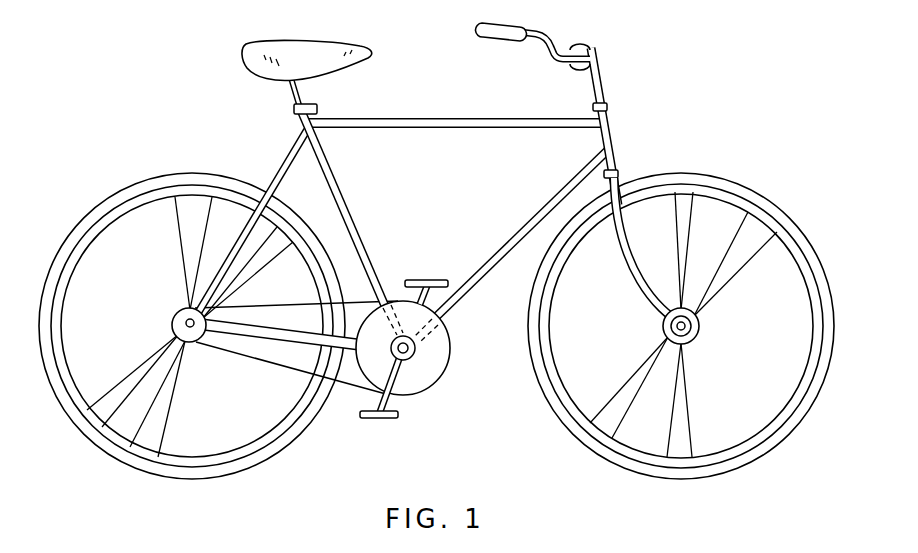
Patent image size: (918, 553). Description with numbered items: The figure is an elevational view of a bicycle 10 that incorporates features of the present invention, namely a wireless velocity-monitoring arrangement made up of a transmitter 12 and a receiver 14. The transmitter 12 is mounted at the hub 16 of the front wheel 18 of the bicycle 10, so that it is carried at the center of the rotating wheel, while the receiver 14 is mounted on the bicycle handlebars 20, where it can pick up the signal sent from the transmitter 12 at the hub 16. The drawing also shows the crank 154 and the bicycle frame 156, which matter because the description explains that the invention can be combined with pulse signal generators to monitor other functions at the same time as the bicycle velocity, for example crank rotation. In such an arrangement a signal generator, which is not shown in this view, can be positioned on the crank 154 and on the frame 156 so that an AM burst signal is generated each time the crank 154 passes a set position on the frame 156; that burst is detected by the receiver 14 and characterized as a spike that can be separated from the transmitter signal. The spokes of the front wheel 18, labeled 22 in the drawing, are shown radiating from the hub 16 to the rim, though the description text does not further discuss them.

The bicycle 10 is at (614, 144).
The transmitter 12 is at (700, 318).
The receiver 14 is at (592, 44).
The hub 16 is at (694, 342).
The front wheel 18 is at (561, 420).
The bicycle handlebars 20 is at (540, 33).
The spokes 22 is at (735, 271).
The crank 154 is at (414, 392).
The bicycle frame 156 is at (364, 233).